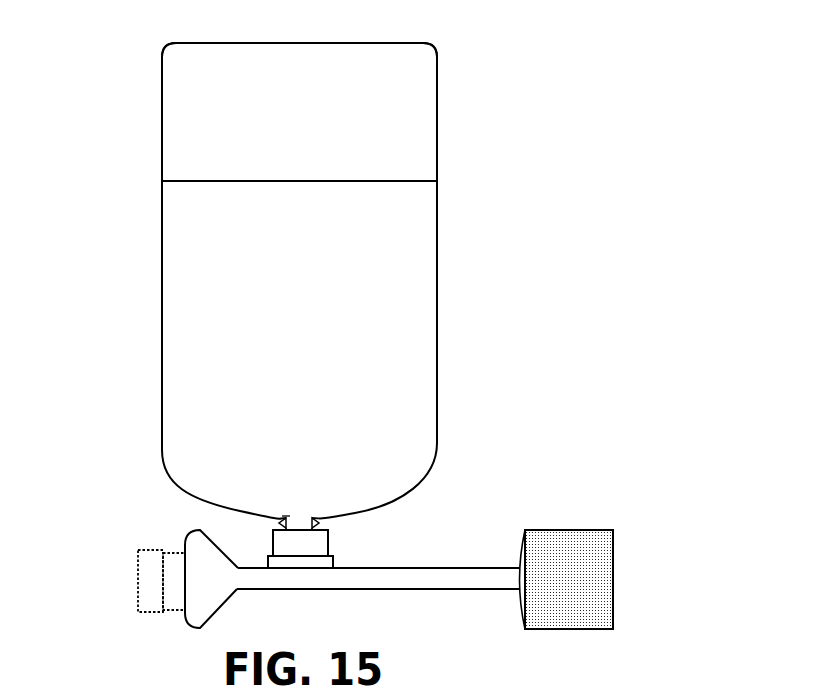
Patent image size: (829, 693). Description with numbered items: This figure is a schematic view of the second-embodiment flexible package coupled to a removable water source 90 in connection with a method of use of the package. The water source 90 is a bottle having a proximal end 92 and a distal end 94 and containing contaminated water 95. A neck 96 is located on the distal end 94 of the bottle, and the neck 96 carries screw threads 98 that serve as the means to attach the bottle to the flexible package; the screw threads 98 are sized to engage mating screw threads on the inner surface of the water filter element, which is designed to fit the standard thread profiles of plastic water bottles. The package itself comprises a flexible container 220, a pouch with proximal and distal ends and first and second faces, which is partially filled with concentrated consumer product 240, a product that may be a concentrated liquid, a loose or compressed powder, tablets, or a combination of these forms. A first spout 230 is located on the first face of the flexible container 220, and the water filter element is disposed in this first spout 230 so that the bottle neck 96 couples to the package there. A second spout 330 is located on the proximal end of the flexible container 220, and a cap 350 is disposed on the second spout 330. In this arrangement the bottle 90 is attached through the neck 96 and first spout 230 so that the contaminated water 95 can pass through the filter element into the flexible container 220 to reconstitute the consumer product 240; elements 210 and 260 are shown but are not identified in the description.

The water source 90 is at (508, 305).
The proximal end 92 is at (467, 72).
The distal end 94 is at (442, 482).
The contaminated water 95 is at (272, 340).
The neck 96 is at (288, 518).
The screw threads 98 is at (282, 517).
The applicator device 210 is at (576, 508).
The flexible container 220 is at (412, 590).
The first spout 230 is at (322, 564).
The concentrated consumer product 240 is at (588, 558).
The connector block 260 is at (316, 549).
The second spout 330 is at (174, 593).
The cap 350 is at (147, 583).